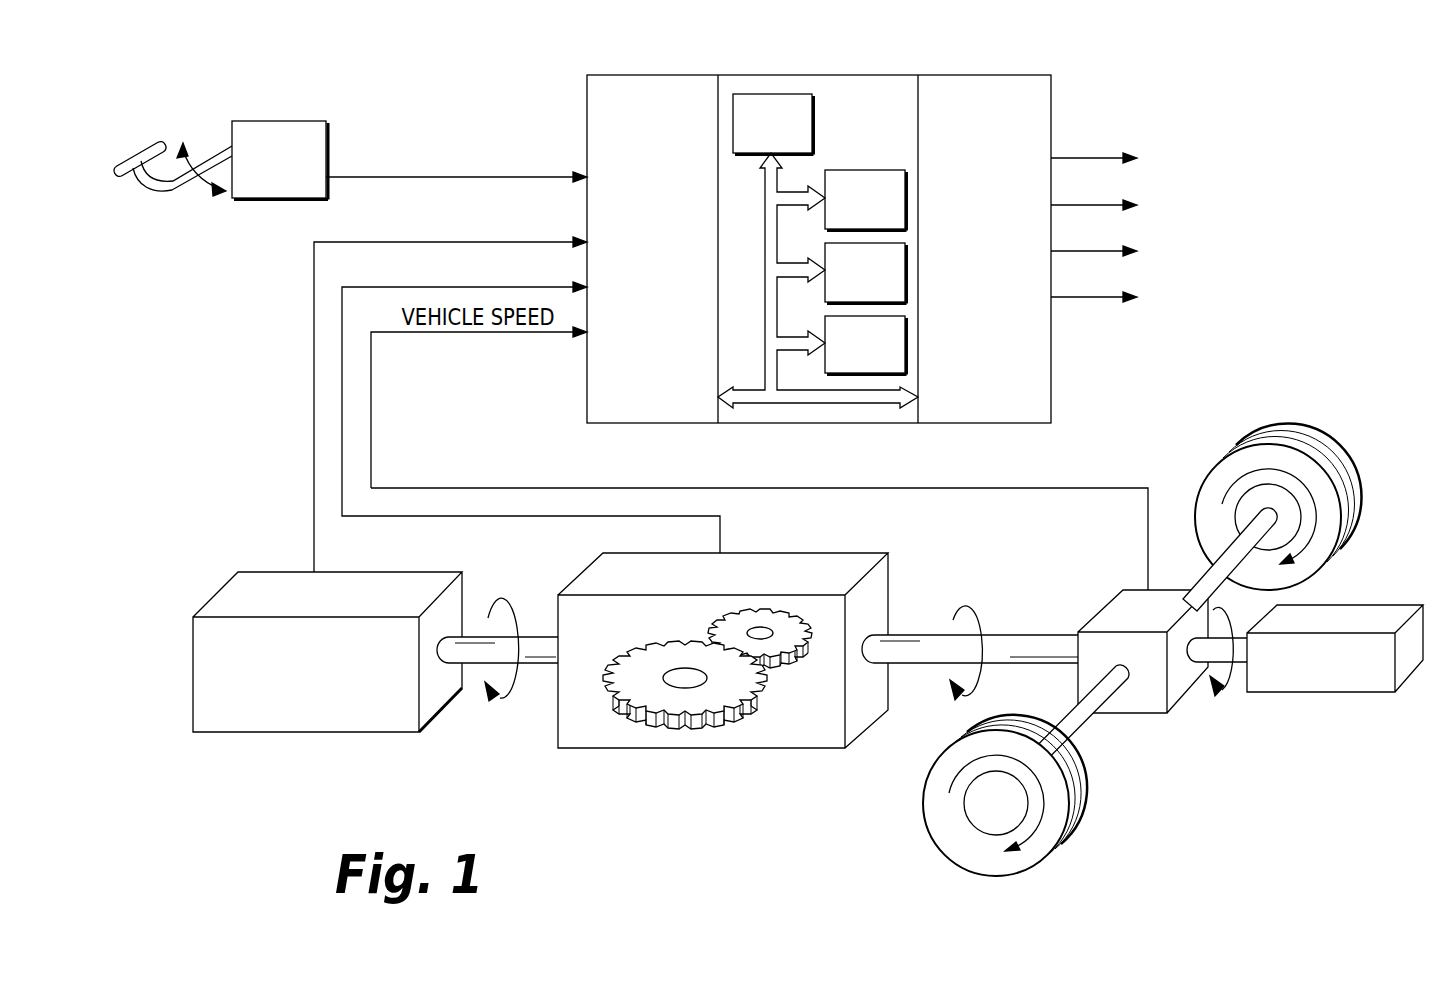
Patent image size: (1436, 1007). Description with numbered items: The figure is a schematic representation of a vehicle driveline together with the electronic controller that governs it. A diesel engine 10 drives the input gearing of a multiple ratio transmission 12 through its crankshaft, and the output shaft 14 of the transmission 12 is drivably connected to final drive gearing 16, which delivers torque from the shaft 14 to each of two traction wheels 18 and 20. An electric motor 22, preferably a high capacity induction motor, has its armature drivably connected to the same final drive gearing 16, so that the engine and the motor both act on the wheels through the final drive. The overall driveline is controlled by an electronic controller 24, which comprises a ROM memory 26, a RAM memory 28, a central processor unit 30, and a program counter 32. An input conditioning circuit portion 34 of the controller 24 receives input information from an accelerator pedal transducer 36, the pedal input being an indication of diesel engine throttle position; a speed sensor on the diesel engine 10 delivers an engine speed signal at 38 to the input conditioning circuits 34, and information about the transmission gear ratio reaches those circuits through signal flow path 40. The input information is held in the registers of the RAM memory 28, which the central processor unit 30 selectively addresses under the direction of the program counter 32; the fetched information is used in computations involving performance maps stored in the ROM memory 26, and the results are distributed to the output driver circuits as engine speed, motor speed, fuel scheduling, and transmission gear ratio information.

The diesel engine 10 is at (312, 733).
The multiple ratio transmission 12 is at (743, 748).
The output shaft 14 is at (1057, 635).
The final drive gearing 16 is at (1110, 598).
The traction wheel 18 is at (1353, 468).
The traction wheel 20 is at (1087, 788).
The electric motor 22 is at (1303, 692).
The electronic controller 24 is at (972, 226).
The ROM memory 26 is at (812, 122).
The RAM memory 28 is at (905, 175).
The central processor unit 30 is at (905, 287).
The program counter 32 is at (905, 337).
The input conditioning circuit portion 34 is at (642, 356).
The accelerator pedal transducer 36 is at (272, 198).
The speed signal 38 is at (314, 348).
The signal flow path 40 is at (355, 518).